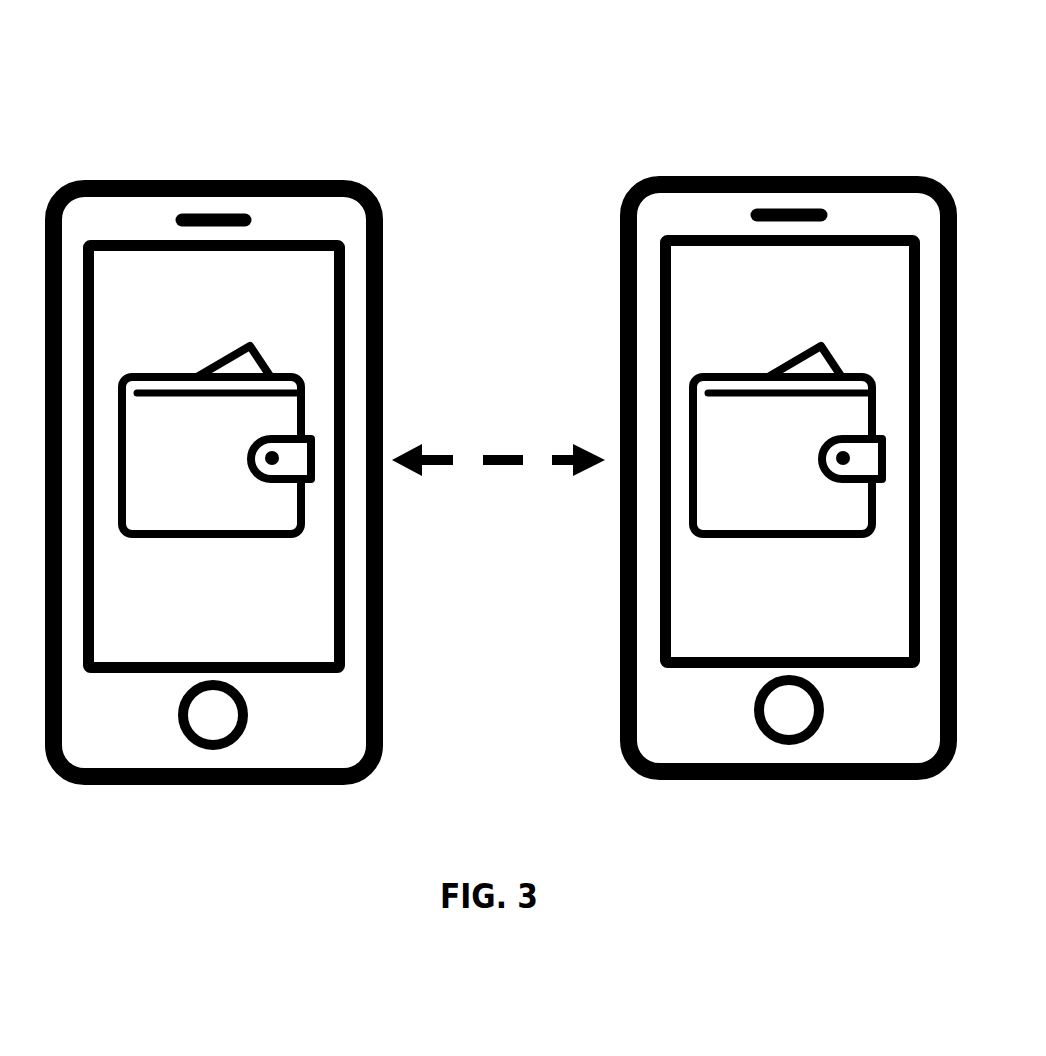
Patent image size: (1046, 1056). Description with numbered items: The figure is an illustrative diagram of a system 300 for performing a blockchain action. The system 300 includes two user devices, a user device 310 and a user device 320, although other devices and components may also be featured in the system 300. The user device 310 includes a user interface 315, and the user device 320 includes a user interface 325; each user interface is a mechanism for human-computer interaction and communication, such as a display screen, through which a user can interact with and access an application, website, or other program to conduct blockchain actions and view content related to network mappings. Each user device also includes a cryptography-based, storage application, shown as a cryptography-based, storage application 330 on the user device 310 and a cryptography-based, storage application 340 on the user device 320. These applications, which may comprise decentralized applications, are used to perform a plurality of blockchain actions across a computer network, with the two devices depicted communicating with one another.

The system 300 is at (473, 50).
The user device 310 is at (190, 164).
The user interface 315 is at (188, 312).
The cryptography-based, storage application 330 is at (188, 467).
The user device 320 is at (768, 158).
The user interface 325 is at (770, 316).
The cryptography-based, storage application 340 is at (763, 467).